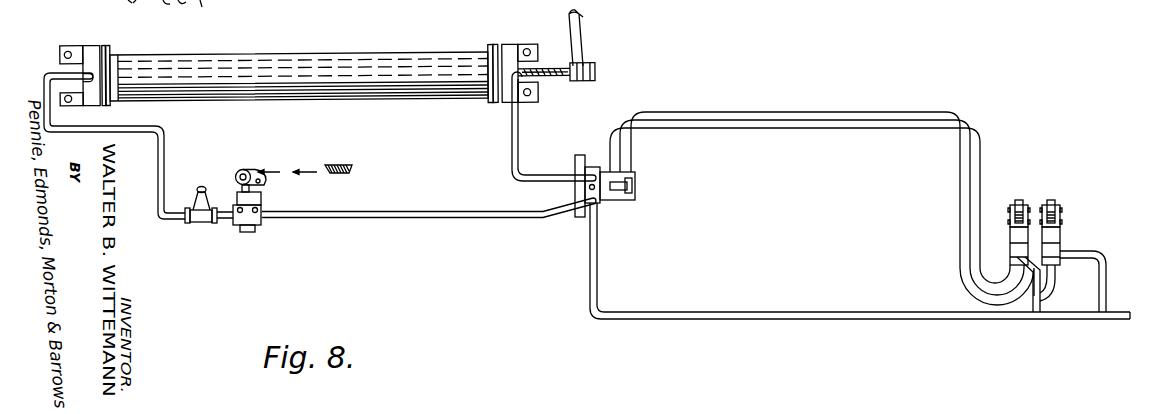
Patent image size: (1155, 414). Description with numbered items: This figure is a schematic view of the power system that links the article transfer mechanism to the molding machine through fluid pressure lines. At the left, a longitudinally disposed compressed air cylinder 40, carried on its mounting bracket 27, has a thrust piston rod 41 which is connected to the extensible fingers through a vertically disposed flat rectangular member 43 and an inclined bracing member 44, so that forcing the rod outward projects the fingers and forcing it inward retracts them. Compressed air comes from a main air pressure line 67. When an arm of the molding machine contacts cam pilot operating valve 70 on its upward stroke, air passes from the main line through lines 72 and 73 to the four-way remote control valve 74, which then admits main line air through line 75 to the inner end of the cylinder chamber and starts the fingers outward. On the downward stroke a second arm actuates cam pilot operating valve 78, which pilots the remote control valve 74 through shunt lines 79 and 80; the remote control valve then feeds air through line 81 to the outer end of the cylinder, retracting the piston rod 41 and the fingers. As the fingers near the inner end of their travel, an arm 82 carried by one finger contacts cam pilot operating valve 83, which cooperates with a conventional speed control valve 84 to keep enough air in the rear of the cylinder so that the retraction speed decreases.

The mounting bracket 27 is at (141, 59).
The compressed air cylinder 40 is at (424, 57).
The thrust piston rod 41 is at (555, 79).
The flat rectangular member 43 is at (585, 19).
The inclined bracing member 44 is at (567, 21).
The main air pressure line 67 is at (1113, 320).
The cam pilot operating valve 70 is at (1057, 245).
The line 72 is at (1107, 277).
The line 73 is at (1053, 281).
The four-way remote control valve 74 is at (622, 198).
The line 75 is at (447, 212).
The cam pilot operating valve 78 is at (1018, 203).
The shunt line 79 is at (1037, 312).
The shunt line 80 is at (977, 170).
The line 81 is at (519, 143).
The arm 82 is at (342, 174).
The cam pilot operating valve 83 is at (259, 221).
The speed control valve 84 is at (203, 200).